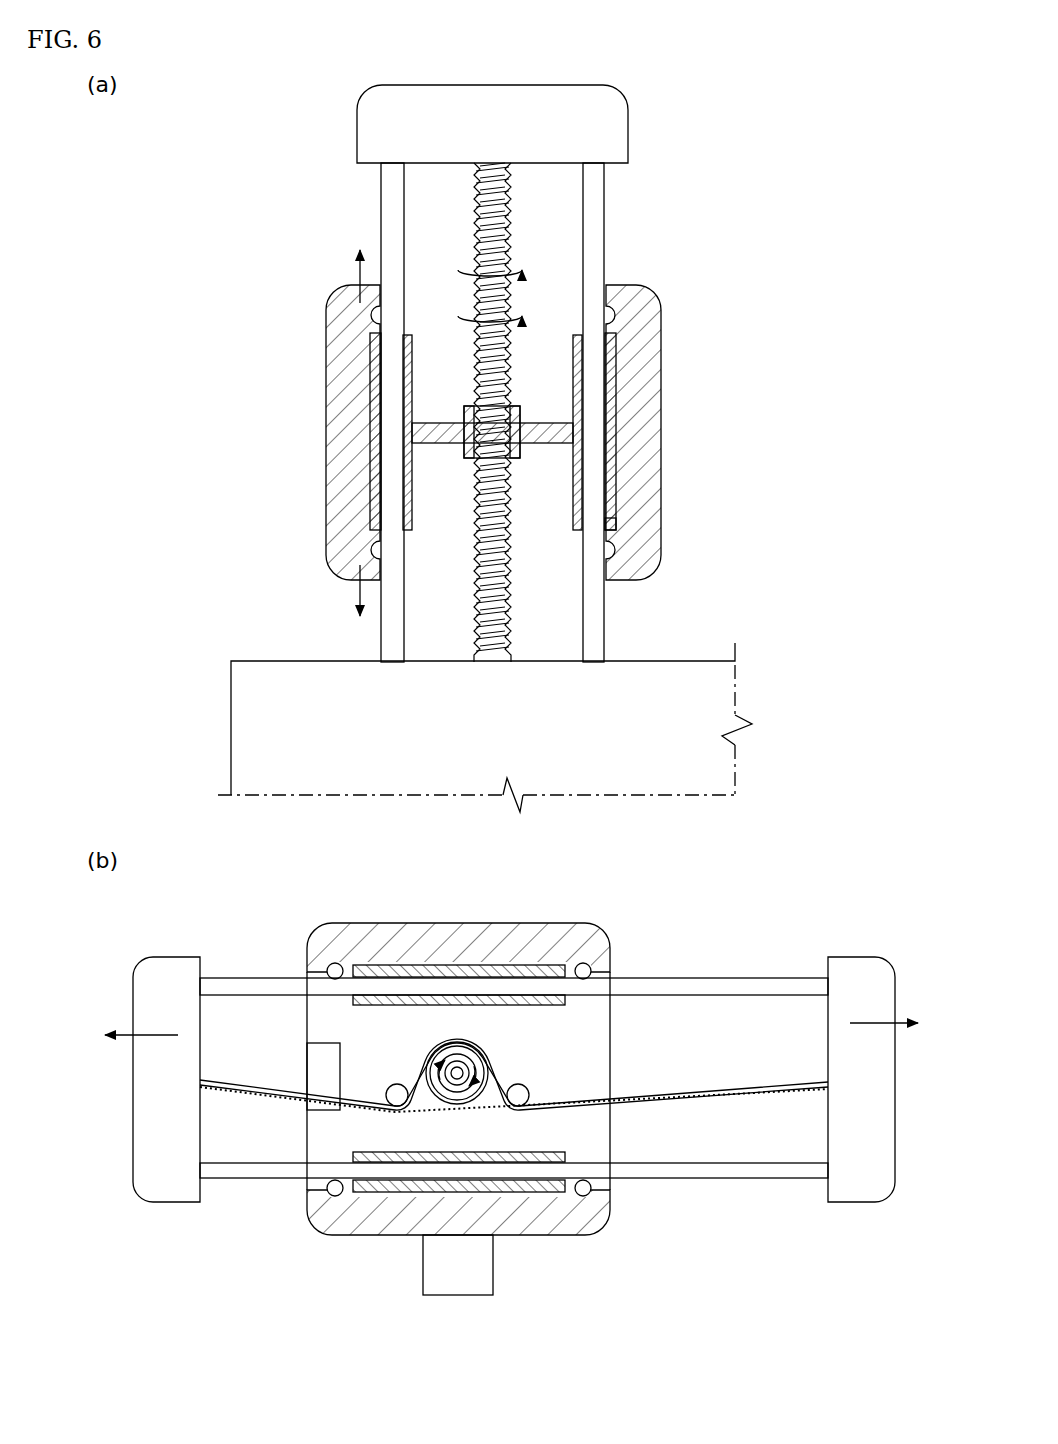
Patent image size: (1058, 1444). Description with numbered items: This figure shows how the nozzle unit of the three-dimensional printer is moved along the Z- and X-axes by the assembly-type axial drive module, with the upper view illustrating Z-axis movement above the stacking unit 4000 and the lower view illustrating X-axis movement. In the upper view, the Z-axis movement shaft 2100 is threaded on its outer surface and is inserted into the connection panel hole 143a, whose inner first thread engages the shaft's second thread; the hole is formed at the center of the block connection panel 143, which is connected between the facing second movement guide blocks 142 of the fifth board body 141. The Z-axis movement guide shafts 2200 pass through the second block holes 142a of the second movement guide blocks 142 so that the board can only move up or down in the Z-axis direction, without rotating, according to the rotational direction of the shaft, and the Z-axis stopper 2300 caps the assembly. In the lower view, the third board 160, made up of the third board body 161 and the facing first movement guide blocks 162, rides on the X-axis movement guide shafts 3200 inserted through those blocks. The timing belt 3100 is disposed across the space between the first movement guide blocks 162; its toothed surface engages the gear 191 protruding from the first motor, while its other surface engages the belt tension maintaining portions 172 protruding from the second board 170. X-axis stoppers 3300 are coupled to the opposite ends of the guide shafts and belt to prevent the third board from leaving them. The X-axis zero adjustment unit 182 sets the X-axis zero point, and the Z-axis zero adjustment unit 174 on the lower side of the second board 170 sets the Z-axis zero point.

The Z-axis stopper 2300 is at (618, 121).
The Z-axis movement shaft 2100 is at (498, 195).
The Z-axis movement guide shafts 2200 is at (593, 217).
The fifth board body 141 is at (648, 419).
The second movement guide block 142 is at (608, 371).
The second block hole 142a is at (608, 533).
The block connection panel 143 is at (435, 437).
The connection panel hole 143a is at (470, 462).
The stacking unit 4000 is at (247, 707).
The X-axis stoppers 3300 is at (172, 1178).
The X-axis movement guide shafts 3200 is at (748, 1170).
The timing belt 3100 is at (695, 1101).
The third board 160 is at (573, 1222).
The third board body 161 is at (573, 942).
The first movement guide block 162 is at (473, 970).
The second board 170 is at (598, 1130).
The belt tension maintaining portion 172 is at (517, 1084).
The Z-axis zero adjustment unit 174 is at (478, 1263).
The X-axis zero adjustment unit 182 is at (327, 1082).
The gear 191 is at (454, 1094).